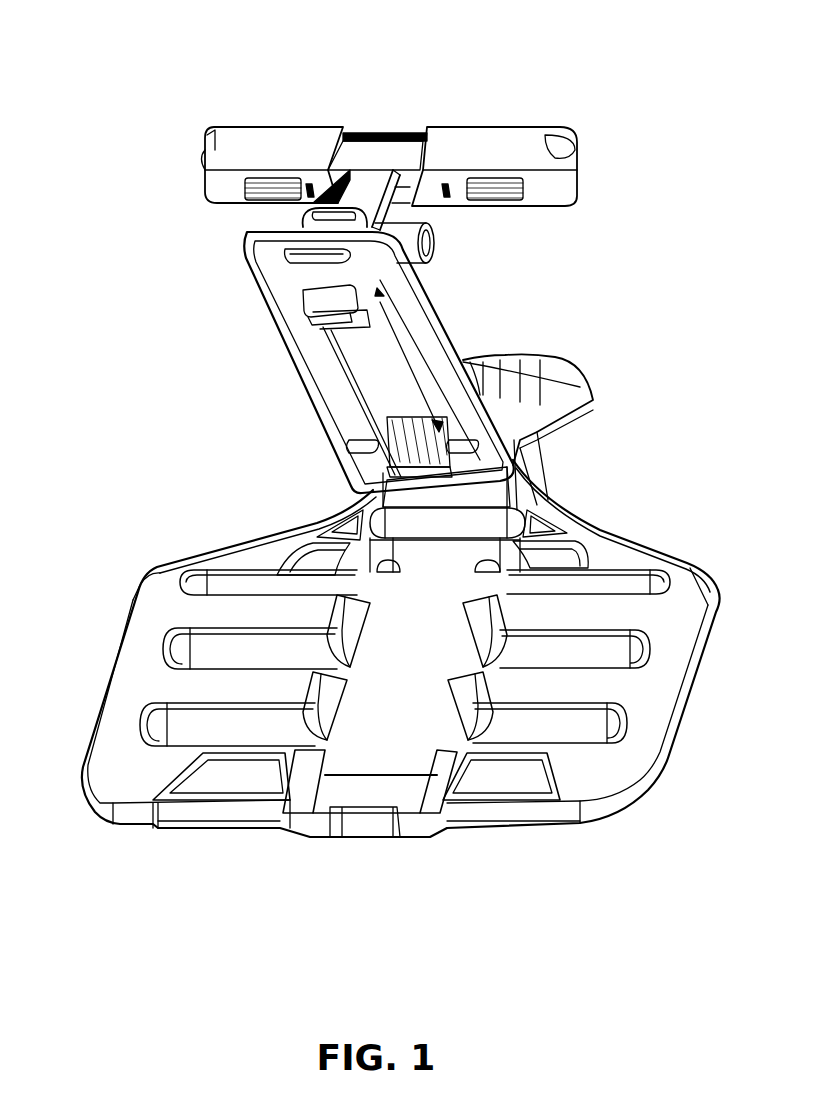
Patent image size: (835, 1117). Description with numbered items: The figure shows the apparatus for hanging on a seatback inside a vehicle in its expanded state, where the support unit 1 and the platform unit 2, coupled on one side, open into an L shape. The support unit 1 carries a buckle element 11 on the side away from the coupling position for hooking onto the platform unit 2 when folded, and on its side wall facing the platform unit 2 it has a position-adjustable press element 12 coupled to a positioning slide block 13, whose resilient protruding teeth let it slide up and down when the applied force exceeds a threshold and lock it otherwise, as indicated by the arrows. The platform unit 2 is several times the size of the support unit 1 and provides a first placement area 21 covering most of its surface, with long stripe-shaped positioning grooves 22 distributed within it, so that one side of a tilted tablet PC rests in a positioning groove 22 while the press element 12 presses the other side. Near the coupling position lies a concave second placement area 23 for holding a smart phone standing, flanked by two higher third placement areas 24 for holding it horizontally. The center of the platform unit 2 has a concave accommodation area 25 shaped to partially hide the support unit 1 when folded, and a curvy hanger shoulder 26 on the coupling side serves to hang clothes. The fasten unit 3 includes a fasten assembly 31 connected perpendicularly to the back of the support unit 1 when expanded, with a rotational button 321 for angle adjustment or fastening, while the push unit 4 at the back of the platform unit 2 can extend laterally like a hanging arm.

The support unit 1 is at (403, 287).
The platform unit 2 is at (105, 802).
The fasten unit 3 is at (325, 108).
The push unit 4 is at (577, 410).
The buckle element 11 is at (290, 257).
The press element 12 is at (307, 300).
The positioning slide block 13 is at (420, 267).
The first placement area 21 is at (160, 610).
The positioning groove 22 is at (213, 657).
The second placement area 23 is at (425, 560).
The third placement area 24 is at (317, 537).
The accommodation area 25 is at (380, 740).
The hanger shoulder 26 is at (247, 535).
The fasten assembly 31 is at (367, 173).
The rotational button 321 is at (407, 233).